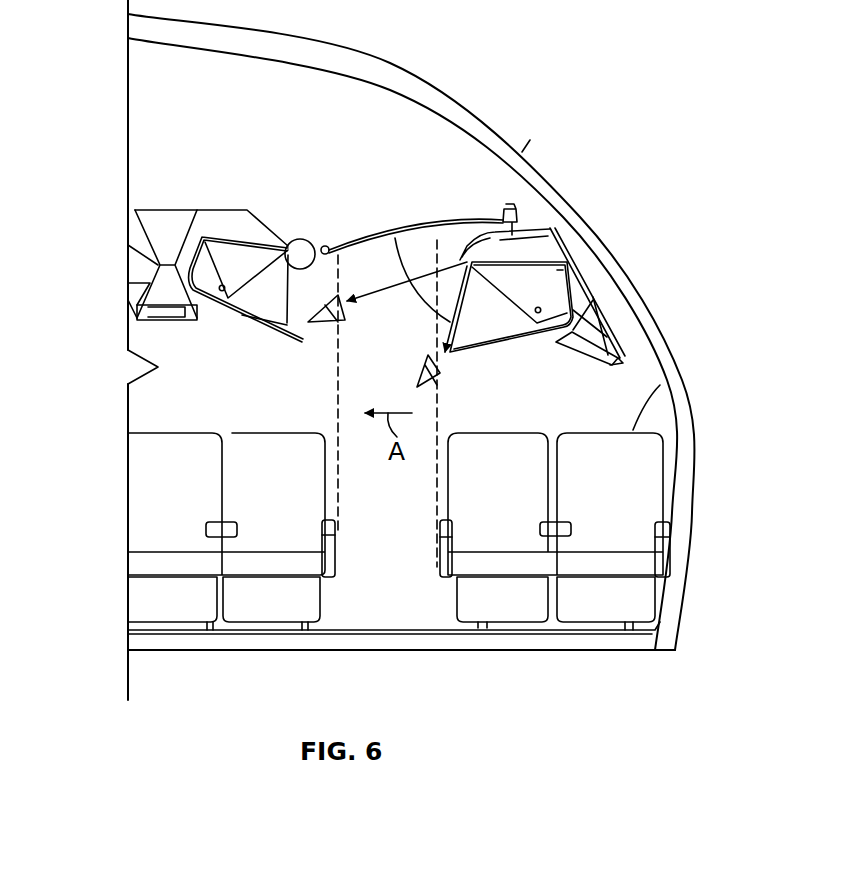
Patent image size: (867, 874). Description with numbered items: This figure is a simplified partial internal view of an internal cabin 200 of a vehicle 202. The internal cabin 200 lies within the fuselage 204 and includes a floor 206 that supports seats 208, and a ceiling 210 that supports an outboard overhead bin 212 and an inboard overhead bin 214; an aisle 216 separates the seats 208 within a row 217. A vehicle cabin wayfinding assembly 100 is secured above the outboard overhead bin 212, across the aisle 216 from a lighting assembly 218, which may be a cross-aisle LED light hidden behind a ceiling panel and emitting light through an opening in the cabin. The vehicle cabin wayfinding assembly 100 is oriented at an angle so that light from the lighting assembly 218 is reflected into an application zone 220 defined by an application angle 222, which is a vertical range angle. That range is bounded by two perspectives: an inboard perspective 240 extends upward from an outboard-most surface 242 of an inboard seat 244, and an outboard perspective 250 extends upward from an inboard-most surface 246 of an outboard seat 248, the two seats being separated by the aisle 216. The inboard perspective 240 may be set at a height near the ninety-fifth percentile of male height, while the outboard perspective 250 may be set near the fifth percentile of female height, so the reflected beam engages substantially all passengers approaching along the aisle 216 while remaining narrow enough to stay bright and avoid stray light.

The vehicle cabin wayfinding assembly 100 is at (520, 222).
The internal cabin 200 is at (144, 168).
The vehicle 202 is at (452, 56).
The fuselage 204 is at (523, 150).
The floor 206 is at (350, 653).
The seats 208 is at (633, 430).
The ceiling 210 is at (430, 230).
The outboard overhead bin 212 is at (578, 255).
The inboard overhead bin 214 is at (222, 320).
The aisle 216 is at (367, 589).
The row 217 is at (93, 534).
The lighting assembly 218 is at (298, 257).
The application zone 220 is at (395, 315).
The application angle 222 is at (394, 238).
The inboard perspective 240 is at (325, 323).
The outboard-most surface 242 is at (338, 527).
The inboard seat 244 is at (288, 433).
The inboard-most surface 246 is at (444, 522).
The outboard seat 248 is at (465, 495).
The outboard perspective 250 is at (441, 373).